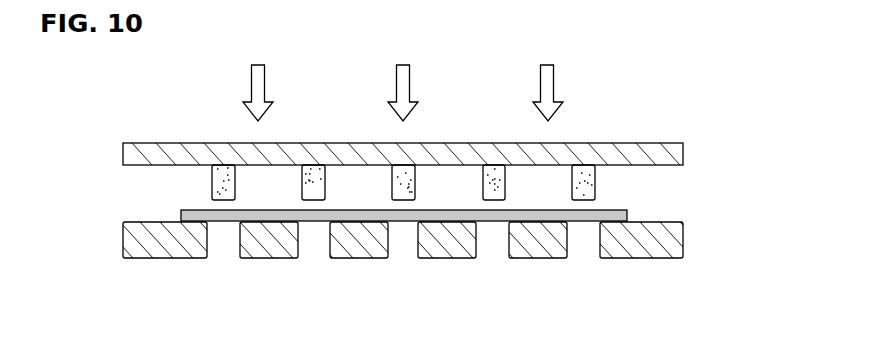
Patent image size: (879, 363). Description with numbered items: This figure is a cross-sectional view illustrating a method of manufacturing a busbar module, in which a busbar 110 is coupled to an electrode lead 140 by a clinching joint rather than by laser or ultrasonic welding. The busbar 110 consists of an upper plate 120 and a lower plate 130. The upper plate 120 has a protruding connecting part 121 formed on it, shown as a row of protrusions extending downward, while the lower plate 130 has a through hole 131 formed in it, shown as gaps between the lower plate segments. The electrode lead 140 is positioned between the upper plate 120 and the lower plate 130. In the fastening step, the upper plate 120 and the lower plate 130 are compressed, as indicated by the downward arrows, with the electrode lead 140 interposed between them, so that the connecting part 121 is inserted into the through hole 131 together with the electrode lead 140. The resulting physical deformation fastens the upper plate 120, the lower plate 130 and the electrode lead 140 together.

The busbar 110 is at (440, 207).
The upper plate 120 is at (683, 150).
The connecting part 121 is at (236, 184).
The lower plate 130 is at (683, 250).
The through hole 131 is at (316, 252).
The electrode lead 140 is at (183, 212).